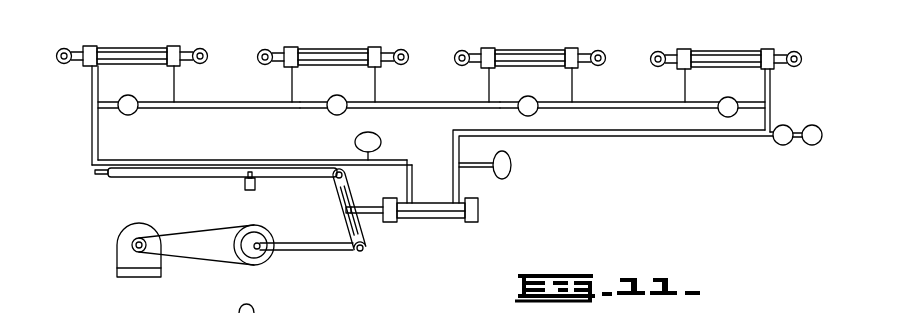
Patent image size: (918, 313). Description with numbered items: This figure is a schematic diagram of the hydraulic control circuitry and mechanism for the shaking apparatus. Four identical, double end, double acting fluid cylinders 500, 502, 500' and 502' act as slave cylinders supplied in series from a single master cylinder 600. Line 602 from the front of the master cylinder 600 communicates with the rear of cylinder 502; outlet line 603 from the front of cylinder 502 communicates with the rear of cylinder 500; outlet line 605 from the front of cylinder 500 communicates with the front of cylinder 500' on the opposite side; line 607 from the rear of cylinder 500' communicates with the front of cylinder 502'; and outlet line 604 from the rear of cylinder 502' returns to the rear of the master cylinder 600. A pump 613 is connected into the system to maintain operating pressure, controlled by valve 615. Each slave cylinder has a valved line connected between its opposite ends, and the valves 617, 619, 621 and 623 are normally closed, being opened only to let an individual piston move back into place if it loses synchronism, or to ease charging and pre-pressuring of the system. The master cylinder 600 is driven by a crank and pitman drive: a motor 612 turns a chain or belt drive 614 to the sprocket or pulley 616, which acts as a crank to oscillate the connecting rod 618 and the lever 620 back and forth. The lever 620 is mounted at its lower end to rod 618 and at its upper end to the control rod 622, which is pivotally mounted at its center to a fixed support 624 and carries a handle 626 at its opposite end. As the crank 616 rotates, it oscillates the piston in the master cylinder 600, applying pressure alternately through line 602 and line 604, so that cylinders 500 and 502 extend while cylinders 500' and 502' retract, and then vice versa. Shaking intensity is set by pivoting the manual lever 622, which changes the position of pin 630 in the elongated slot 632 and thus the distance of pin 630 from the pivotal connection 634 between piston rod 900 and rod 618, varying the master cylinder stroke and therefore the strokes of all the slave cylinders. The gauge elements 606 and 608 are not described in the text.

The fluid cylinder 502 is at (132, 57).
The fluid cylinder 500 is at (333, 59).
The fluid cylinder 500' is at (534, 59).
The fluid cylinder 502' is at (726, 59).
The outlet line 603 is at (221, 104).
The outlet line 605 is at (413, 104).
The line 607 is at (609, 104).
The outlet line 604 is at (771, 125).
The line 602 is at (92, 109).
The control rod 622 is at (151, 168).
The valve 617 is at (138, 109).
The valve 619 is at (347, 110).
The valve 621 is at (538, 111).
The valve 623 is at (718, 112).
The pressure gauge 606 is at (353, 143).
The pressure gauge 608 is at (511, 161).
The handle 626 is at (96, 174).
The fixed support 624 is at (245, 190).
The motor 612 is at (127, 233).
The chain or belt drive 614 is at (197, 232).
The sprocket or pulley 616 is at (263, 259).
The connecting rod 618 is at (302, 251).
The elongated slot 632 is at (361, 256).
The lever 620 is at (347, 176).
The pivotal connection 634 is at (356, 256).
The pin 630 is at (343, 211).
The piston rod 900 is at (373, 214).
The master cylinder 600 is at (458, 223).
The valve 615 is at (778, 146).
The pump 613 is at (808, 148).